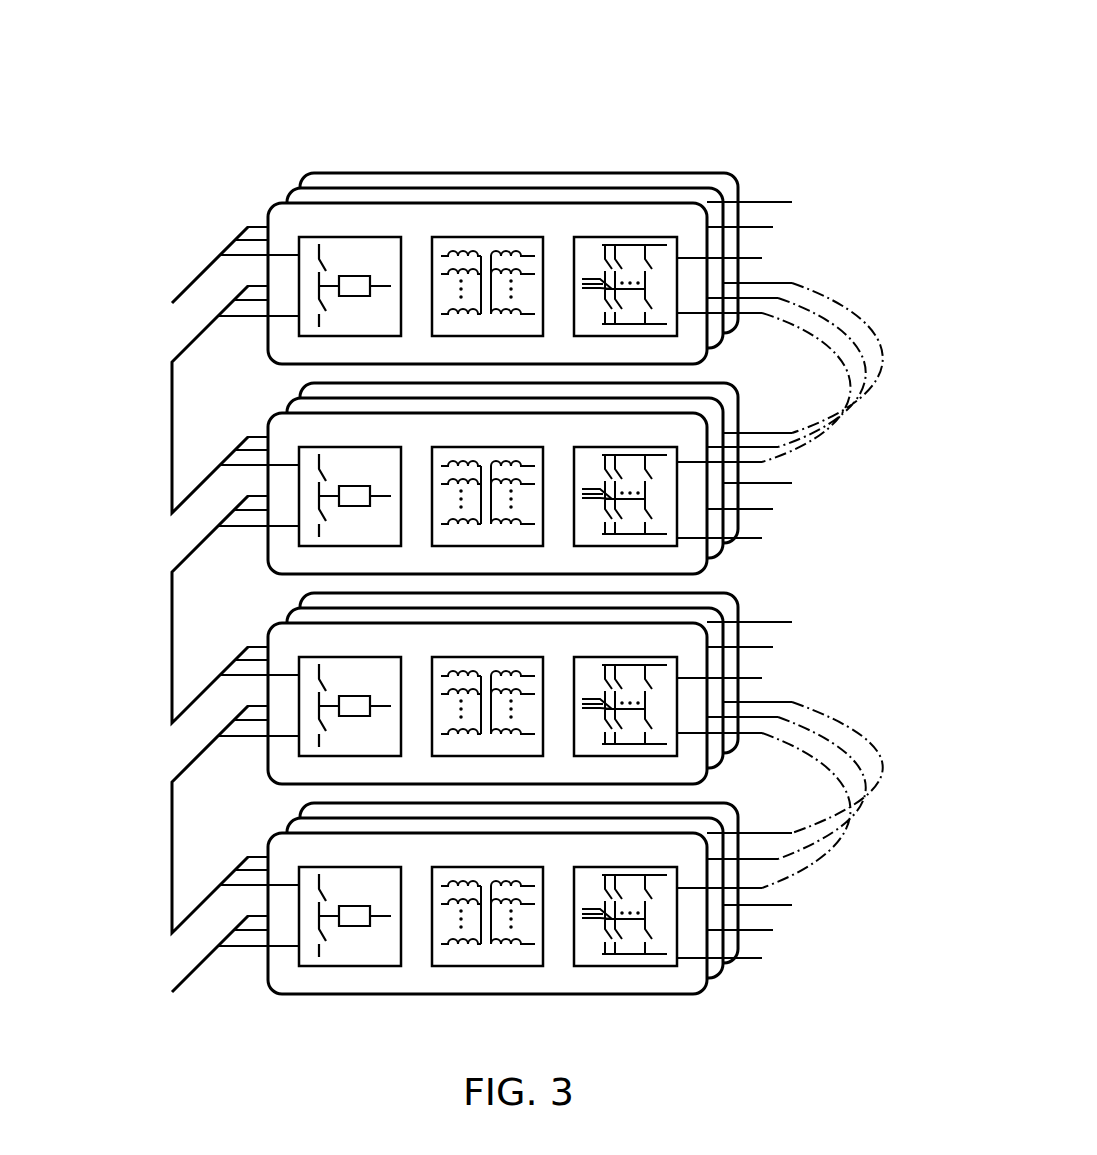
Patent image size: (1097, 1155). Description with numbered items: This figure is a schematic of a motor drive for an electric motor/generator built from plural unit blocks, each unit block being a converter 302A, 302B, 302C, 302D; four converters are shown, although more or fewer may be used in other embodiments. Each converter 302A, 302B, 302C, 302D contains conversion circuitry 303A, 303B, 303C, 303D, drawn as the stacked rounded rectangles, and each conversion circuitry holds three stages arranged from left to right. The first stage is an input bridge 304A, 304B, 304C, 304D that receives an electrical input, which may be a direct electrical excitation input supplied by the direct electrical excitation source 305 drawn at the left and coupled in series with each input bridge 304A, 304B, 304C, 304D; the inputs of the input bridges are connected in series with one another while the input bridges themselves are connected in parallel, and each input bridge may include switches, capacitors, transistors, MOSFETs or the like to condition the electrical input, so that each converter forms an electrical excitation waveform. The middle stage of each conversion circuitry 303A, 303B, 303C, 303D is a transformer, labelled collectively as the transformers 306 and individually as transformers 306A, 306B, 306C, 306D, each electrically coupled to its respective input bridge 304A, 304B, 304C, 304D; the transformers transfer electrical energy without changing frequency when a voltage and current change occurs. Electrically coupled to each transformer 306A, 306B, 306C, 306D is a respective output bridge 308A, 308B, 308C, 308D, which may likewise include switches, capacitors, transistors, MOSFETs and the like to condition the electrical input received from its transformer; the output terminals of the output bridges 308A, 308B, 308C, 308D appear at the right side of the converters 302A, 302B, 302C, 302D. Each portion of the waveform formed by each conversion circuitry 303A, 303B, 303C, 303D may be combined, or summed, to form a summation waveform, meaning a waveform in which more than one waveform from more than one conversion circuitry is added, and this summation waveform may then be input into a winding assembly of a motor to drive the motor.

The converter 302A is at (658, 150).
The converter 302B is at (447, 470).
The converter 302C is at (599, 668).
The converter 302D is at (572, 928).
The conversion circuitry 303A is at (500, 167).
The conversion circuitry 303B is at (590, 451).
The conversion circuitry 303C is at (565, 655).
The conversion circuitry 303D is at (392, 905).
The input bridge 304A is at (312, 236).
The input bridge 304B is at (240, 527).
The input bridge 304C is at (222, 734).
The input bridge 304D is at (350, 954).
The direct electrical excitation source 305 is at (172, 478).
The power conversion system 306 is at (765, 62).
The transformer 306A is at (450, 236).
The transformer 306B is at (313, 549).
The transformer 306C is at (616, 728).
The transformer 306D is at (487, 954).
The output bridge 308A is at (605, 236).
The output bridge 308B is at (737, 494).
The output bridge 308C is at (734, 706).
The output bridge 308D is at (625, 954).